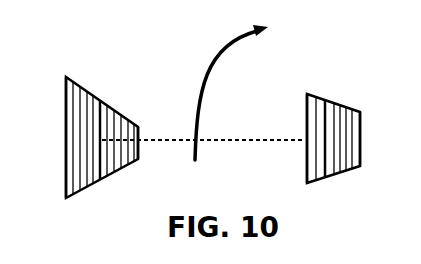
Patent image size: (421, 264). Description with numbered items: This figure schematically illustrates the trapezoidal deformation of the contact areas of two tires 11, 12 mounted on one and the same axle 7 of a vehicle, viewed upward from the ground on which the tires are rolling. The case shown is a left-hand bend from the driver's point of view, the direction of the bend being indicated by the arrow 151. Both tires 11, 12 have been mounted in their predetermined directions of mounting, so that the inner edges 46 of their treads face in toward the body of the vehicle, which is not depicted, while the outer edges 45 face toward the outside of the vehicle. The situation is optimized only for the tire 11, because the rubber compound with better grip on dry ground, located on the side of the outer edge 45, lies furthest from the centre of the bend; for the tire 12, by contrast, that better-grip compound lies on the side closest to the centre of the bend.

The axle 7 is at (228, 142).
The tire 11 is at (113, 86).
The tire 12 is at (331, 82).
The outer edge 45 is at (54, 127).
The inner edge 46 is at (150, 127).
The arrow 151 is at (217, 57).